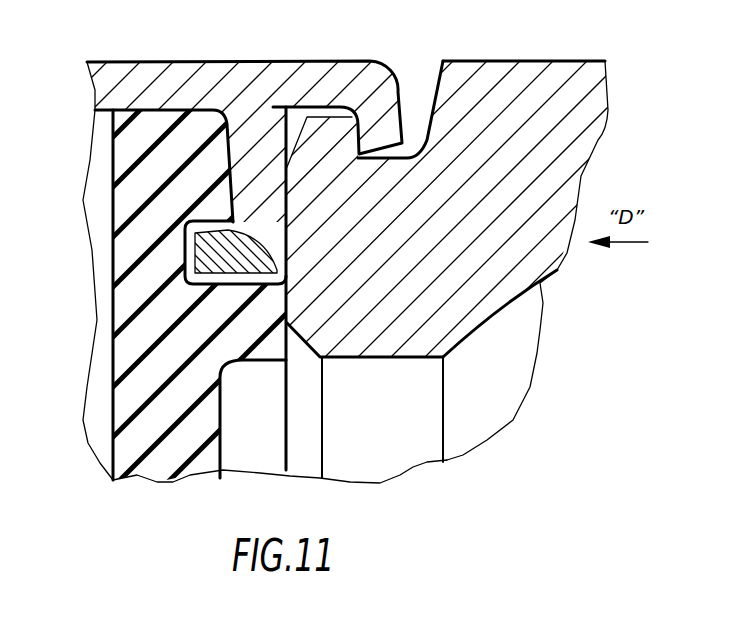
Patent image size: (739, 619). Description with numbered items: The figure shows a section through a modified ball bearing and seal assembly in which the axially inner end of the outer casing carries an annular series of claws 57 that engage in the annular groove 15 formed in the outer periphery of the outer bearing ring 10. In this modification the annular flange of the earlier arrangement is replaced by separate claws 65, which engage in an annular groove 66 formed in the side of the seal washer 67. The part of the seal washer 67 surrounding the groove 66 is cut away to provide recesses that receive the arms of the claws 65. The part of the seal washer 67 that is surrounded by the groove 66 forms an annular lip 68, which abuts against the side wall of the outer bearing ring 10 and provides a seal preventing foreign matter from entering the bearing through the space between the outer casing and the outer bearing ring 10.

The claws 57 is at (368, 59).
The outer bearing ring 10 is at (487, 58).
The annular groove 15 is at (427, 117).
The claws 65 is at (275, 224).
The annular groove 66 is at (185, 247).
The seal washer 67 is at (110, 322).
The annular lip 68 is at (279, 336).